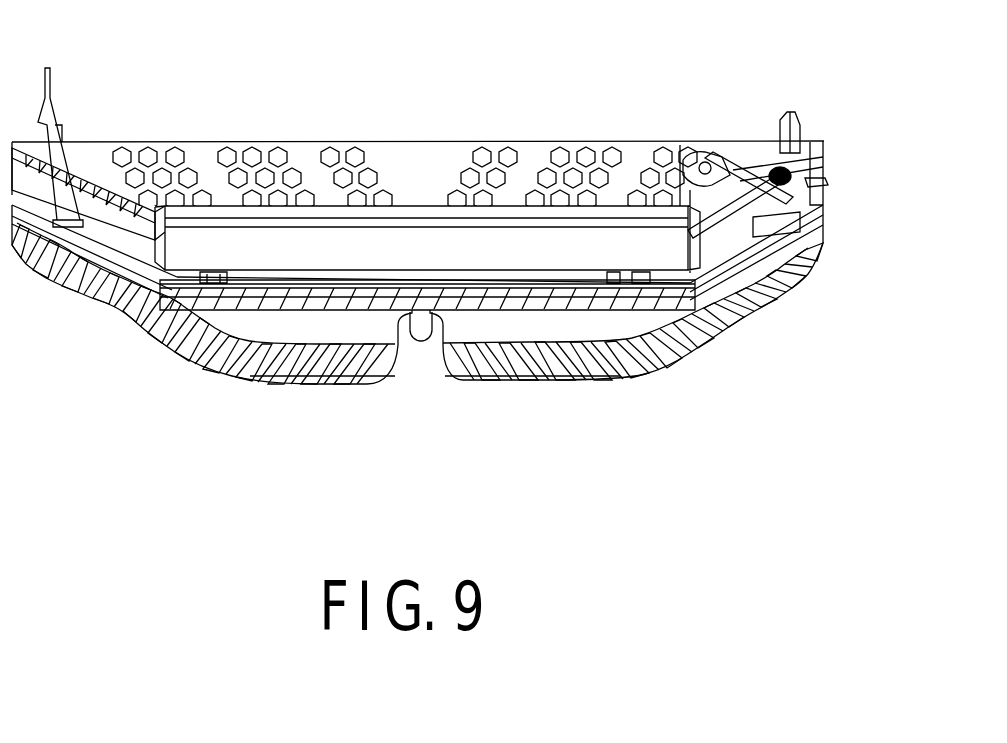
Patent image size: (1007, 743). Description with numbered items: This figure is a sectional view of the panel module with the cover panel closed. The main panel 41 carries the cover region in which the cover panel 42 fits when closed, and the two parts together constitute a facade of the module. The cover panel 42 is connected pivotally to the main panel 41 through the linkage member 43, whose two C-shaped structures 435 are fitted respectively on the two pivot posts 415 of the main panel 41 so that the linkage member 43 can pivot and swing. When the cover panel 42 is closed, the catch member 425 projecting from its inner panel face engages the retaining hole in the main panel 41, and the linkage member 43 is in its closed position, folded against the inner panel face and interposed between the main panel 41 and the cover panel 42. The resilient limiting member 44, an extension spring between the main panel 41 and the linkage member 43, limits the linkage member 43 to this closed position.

The main panel 41 is at (430, 172).
The cover panel 42 is at (497, 362).
The linkage member 43 is at (733, 160).
The resilient limiting member 44 is at (833, 183).
The pivot posts 415 is at (707, 158).
The catch member 425 is at (47, 107).
The C-shaped structures 435 is at (701, 160).